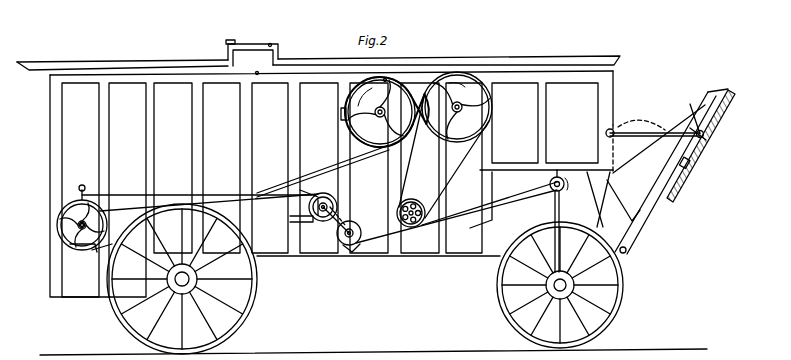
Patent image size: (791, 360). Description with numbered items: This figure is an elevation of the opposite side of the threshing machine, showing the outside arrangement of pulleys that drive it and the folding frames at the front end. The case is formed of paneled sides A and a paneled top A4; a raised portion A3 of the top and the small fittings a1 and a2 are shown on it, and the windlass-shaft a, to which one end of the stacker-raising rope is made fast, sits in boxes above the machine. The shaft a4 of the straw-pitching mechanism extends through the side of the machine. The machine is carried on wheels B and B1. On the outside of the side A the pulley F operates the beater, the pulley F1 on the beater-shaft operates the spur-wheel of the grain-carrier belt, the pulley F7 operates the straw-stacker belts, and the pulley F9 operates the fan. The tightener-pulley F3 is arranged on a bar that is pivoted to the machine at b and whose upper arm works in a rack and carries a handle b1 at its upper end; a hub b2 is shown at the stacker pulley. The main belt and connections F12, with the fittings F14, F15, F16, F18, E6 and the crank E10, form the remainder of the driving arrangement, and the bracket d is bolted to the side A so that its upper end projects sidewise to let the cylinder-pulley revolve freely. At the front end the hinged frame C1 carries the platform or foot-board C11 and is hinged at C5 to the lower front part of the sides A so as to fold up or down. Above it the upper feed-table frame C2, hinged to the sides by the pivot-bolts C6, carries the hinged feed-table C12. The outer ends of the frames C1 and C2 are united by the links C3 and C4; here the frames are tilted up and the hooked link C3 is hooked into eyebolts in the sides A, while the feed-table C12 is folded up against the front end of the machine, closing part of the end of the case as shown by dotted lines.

The sides of the machine A is at (331, 184).
The raised roof section A3 is at (253, 41).
The top A4 is at (318, 58).
The windlass-shaft a is at (255, 80).
The tab a1 is at (237, 46).
The pin a2 is at (280, 42).
The shaft a4 is at (393, 79).
The rear wheel B is at (565, 285).
The front wheel B1 is at (250, 283).
The beater-pulley F is at (380, 112).
The pulley F1 is at (457, 107).
The tightener-pulley F3 is at (395, 213).
The straw-stacker pulley F7 is at (71, 217).
The fan-pulley F9 is at (417, 165).
The connecting rods F12 is at (378, 262).
The idler pulley F14 is at (329, 218).
The bracket F15 is at (345, 250).
The bracket F16 is at (295, 212).
The bracket F18 is at (95, 248).
The bracket E6 is at (329, 120).
The crank E10 is at (574, 184).
The pivot b is at (350, 222).
The handle b1 is at (304, 184).
The hub b2 is at (77, 217).
The bracket d is at (564, 231).
The hinged frame C1 is at (671, 171).
The upper feed-table frame C2 is at (687, 146).
The link C3 is at (641, 119).
The link C4 is at (687, 118).
The hinge C5 is at (625, 250).
The pivot-bolts C6 is at (644, 127).
The platform or foot-board C11 is at (693, 165).
The feed-table C12 is at (656, 163).